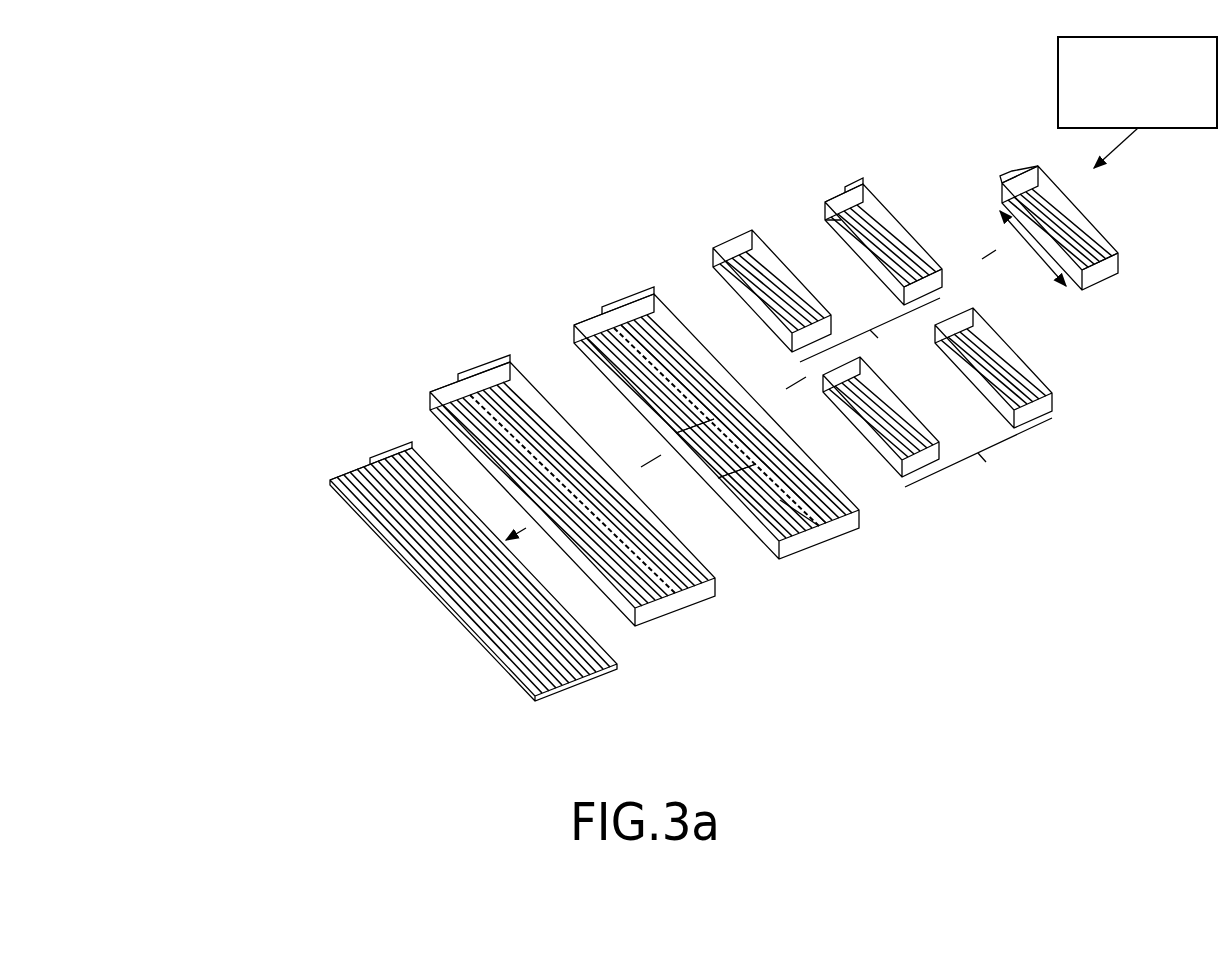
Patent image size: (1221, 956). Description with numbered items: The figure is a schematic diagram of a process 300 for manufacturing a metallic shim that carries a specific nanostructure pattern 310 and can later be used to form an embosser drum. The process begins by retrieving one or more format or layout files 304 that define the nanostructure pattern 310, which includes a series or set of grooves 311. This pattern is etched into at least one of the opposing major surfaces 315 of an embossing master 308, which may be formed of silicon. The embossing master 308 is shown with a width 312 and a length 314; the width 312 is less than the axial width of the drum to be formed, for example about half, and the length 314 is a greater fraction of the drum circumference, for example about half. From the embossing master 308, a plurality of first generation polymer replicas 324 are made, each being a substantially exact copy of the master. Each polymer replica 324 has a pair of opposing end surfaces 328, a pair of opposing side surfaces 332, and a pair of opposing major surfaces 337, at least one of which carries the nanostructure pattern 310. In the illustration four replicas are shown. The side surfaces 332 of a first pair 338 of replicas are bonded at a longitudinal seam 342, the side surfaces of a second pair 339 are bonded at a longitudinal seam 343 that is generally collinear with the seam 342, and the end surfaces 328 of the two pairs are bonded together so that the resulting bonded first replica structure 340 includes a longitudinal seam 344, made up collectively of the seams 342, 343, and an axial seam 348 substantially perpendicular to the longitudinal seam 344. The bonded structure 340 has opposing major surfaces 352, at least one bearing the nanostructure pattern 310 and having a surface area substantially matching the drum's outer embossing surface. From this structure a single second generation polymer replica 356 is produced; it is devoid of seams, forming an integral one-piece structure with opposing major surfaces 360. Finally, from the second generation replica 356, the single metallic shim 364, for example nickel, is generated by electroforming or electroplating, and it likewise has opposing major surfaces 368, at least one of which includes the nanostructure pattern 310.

The process 300 is at (217, 198).
The format or layout files 304 is at (1058, 70).
The embossing master 308 is at (1036, 164).
The nanostructure pattern 310 is at (1063, 221).
The grooves 311 is at (1107, 245).
The width 312 is at (1092, 297).
The length 314 is at (1037, 260).
The opposing major surfaces 315 is at (1003, 181).
The first generation polymer replicas 324 is at (1030, 480).
The end surfaces 328 is at (860, 185).
The side surfaces 332 is at (882, 215).
The major surfaces 337 is at (838, 190).
The first pair 338 is at (870, 334).
The second pair 339 is at (937, 402).
The bonded first replica structure 340 is at (848, 541).
The longitudinal seam 342 is at (645, 355).
The longitudinal seam 343 is at (768, 497).
The longitudinal seam 344 is at (800, 527).
The axial seam 348 is at (750, 410).
The opposing major surfaces 352 is at (655, 289).
The second generation polymer replica 356 is at (694, 619).
The opposing major surfaces 360 is at (510, 360).
The metallic shim 364 is at (594, 691).
The opposing major surfaces 368 is at (412, 448).